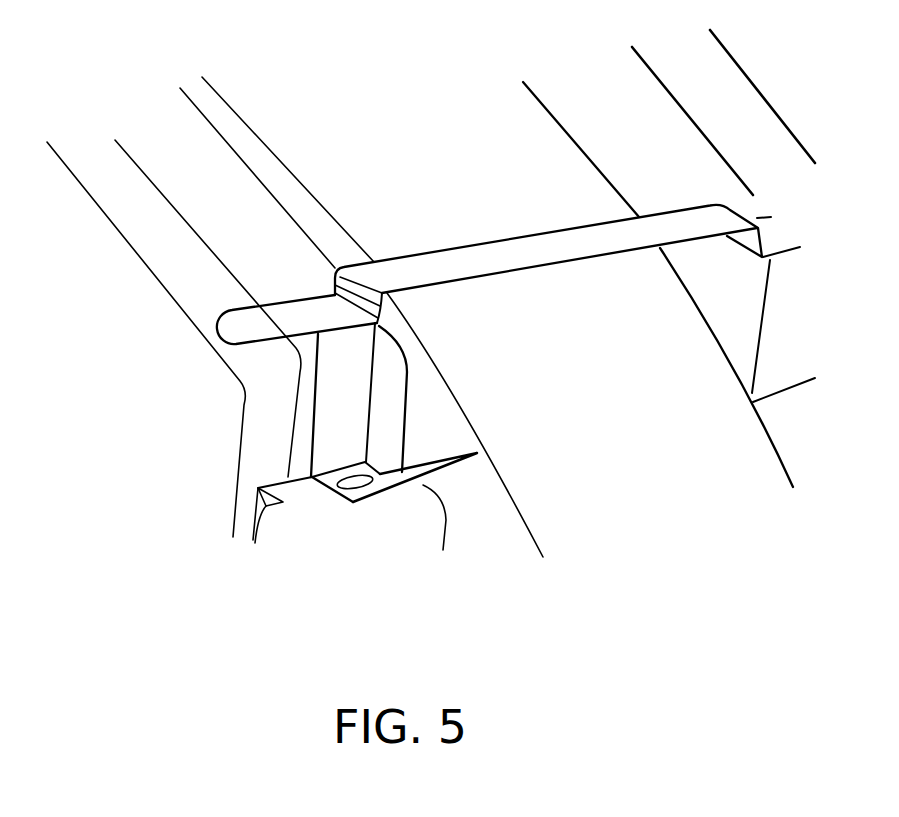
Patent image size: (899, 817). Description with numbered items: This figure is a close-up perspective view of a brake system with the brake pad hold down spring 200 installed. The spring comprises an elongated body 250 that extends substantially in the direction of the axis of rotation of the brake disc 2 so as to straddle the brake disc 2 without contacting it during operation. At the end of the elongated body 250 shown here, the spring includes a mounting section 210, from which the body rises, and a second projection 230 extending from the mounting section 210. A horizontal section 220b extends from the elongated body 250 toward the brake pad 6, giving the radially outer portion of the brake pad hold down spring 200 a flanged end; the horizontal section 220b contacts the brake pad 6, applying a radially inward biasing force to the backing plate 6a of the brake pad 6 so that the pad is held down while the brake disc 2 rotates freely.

The brake disc 2 is at (288, 122).
The brake pad 6 is at (267, 192).
The backing plate 6a is at (190, 252).
The brake pad hold down spring 200 is at (489, 317).
The elongated body 250 is at (543, 253).
The horizontal section 220b is at (290, 323).
The mounting section 210 is at (376, 472).
The second projection 230 is at (440, 465).